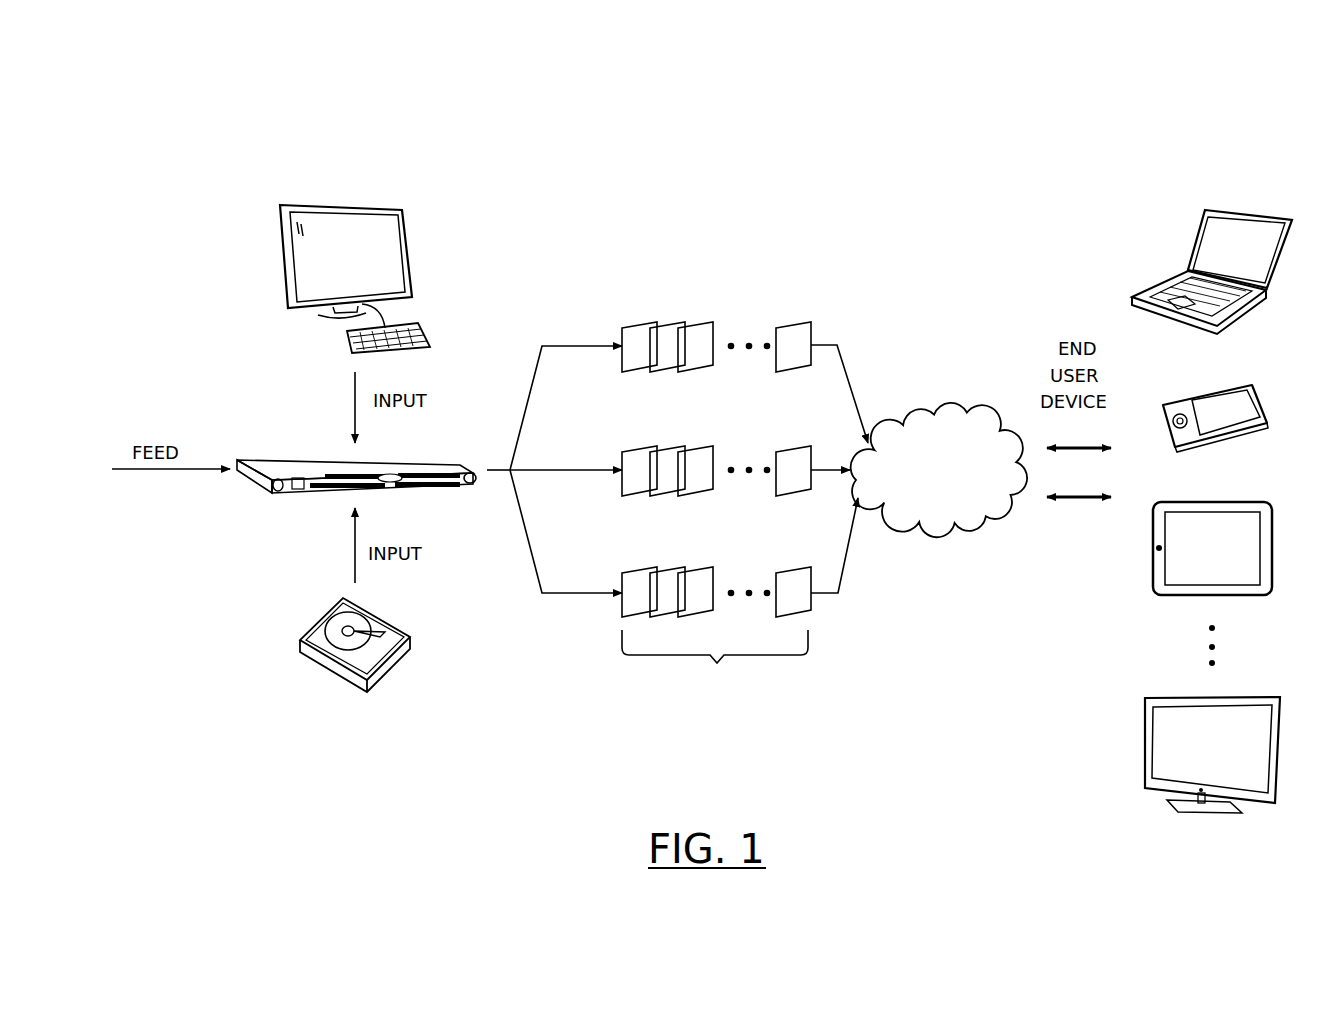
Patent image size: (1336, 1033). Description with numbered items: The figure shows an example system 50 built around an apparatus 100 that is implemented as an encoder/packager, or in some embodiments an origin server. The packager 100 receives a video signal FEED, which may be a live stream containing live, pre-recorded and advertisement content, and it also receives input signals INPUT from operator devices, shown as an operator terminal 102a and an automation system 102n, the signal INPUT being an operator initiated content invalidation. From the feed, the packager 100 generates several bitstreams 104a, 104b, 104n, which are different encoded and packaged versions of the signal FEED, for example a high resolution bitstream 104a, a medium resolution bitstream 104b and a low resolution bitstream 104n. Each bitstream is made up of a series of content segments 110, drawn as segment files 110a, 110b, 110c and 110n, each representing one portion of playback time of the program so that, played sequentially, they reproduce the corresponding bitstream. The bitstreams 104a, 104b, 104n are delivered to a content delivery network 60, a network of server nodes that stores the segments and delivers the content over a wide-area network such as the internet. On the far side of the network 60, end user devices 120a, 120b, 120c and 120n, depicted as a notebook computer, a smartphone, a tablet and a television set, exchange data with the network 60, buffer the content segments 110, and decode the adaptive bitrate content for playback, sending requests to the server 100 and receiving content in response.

The system 50 is at (648, 90).
The apparatus 100 is at (383, 460).
The operator device 102a is at (400, 205).
The operator device 102n is at (390, 633).
The bitstream 104a is at (583, 343).
The bitstream 104b is at (613, 465).
The bitstream 104n is at (580, 597).
The content segments 110 is at (724, 479).
The content segment 110a is at (642, 323).
The content segment 110b is at (673, 322).
The content segment 110c is at (707, 323).
The content segment 110n is at (808, 322).
The content delivery network 60 is at (947, 530).
The end user device 120a is at (1237, 212).
The end user device 120b is at (1235, 387).
The end user device 120c is at (1233, 502).
The end user device 120n is at (1237, 698).